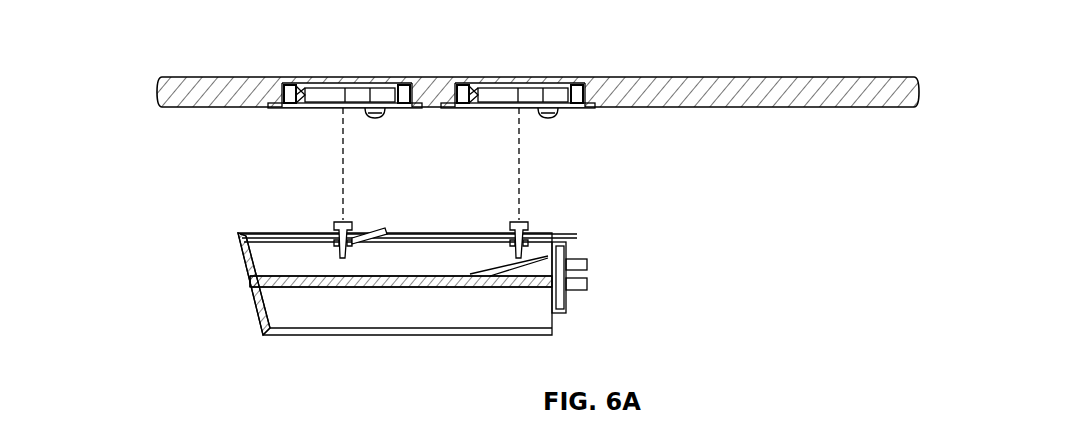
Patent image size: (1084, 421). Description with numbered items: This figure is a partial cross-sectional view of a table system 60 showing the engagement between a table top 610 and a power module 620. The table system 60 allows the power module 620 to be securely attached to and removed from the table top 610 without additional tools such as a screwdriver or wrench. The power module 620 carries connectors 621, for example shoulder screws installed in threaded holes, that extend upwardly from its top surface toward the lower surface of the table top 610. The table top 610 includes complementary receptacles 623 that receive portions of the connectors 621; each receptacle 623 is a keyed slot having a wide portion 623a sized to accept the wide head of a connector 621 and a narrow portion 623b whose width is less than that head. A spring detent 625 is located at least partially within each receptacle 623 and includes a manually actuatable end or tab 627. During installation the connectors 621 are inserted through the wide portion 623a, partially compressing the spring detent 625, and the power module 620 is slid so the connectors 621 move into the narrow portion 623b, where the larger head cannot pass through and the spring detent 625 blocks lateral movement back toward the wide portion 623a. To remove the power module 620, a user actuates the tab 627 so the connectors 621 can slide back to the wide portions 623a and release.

The table system 60 is at (128, 40).
The table top 610 is at (868, 75).
The power module 620 is at (240, 231).
The connectors 621 is at (356, 224).
The complementary receptacles 623 is at (278, 112).
The wide portion 623a is at (355, 108).
The narrow portion 623b is at (318, 108).
The spring detent 625 is at (291, 84).
The manually actuatable end or tab 627 is at (385, 110).